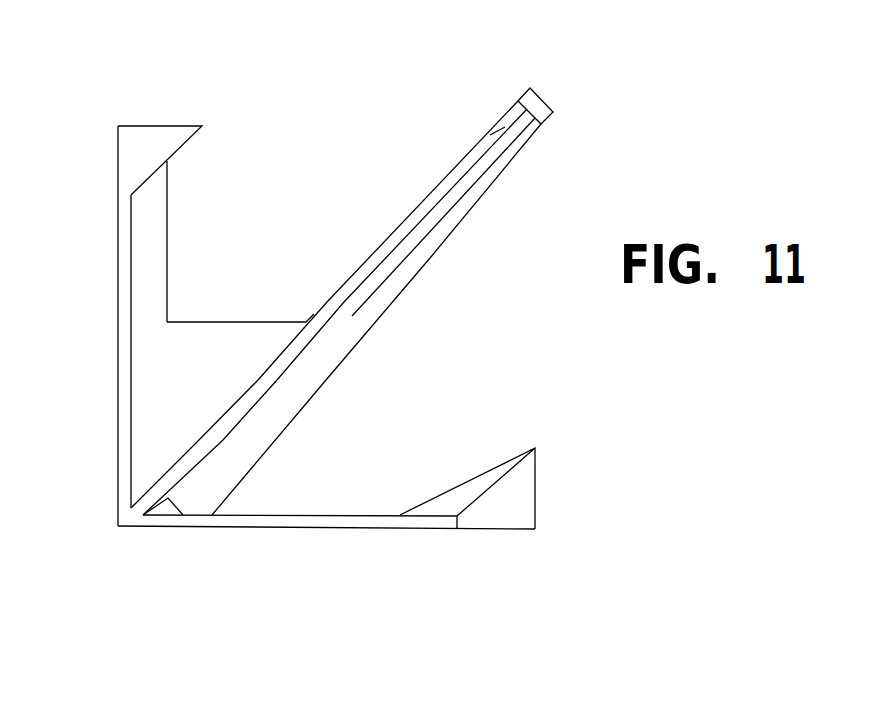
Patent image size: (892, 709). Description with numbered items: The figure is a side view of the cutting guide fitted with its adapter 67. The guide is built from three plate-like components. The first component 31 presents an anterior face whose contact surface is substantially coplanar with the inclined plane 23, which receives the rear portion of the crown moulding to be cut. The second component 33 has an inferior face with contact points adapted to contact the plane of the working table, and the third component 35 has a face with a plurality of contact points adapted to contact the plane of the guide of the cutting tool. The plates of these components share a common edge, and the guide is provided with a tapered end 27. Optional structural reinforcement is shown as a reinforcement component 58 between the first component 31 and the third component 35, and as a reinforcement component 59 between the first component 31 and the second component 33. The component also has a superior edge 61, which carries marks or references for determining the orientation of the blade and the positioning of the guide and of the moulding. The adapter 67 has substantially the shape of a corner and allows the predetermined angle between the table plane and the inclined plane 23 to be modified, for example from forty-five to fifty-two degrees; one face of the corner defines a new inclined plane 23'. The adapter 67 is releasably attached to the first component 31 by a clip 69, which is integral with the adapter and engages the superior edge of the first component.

The inclined plane 23 is at (324, 308).
The new inclined plane 23' is at (445, 217).
The tapered end 27 is at (524, 483).
The first component 31 is at (336, 313).
The second component 33 is at (376, 517).
The third component 35 is at (118, 398).
The reinforcement component 58 is at (242, 322).
The reinforcement component 59 is at (166, 500).
The superior edge 61 is at (147, 126).
The adapter 67 is at (497, 175).
The clip 69 is at (542, 99).